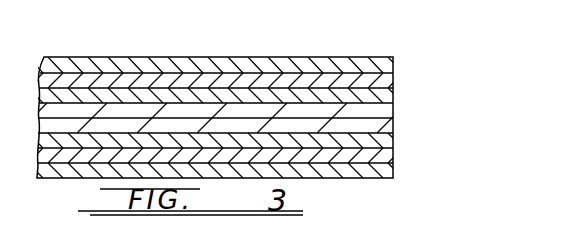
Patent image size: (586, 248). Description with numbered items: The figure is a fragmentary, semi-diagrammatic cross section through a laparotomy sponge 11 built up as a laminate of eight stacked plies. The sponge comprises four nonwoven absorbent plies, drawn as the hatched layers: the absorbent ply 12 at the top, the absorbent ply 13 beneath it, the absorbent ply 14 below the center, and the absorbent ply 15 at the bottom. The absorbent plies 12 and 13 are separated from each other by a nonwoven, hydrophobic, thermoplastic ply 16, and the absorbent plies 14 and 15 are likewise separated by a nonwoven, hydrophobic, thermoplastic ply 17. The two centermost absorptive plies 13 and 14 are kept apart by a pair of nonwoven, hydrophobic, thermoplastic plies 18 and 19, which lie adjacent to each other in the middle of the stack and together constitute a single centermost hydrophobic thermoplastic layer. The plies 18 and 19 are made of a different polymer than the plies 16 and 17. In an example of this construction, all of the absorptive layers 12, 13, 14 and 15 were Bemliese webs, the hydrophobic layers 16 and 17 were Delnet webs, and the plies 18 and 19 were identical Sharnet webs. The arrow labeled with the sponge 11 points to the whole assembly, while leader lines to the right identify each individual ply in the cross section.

The laparotomy sponge 11 is at (262, 48).
The nonwoven absorbent ply 12 is at (393, 62).
The nonwoven hydrophobic thermoplastic ply 16 is at (393, 75).
The nonwoven absorbent ply 13 is at (393, 92).
The nonwoven hydrophobic thermoplastic ply 18 is at (393, 108).
The nonwoven hydrophobic thermoplastic ply 19 is at (393, 125).
The nonwoven absorbent ply 14 is at (393, 142).
The nonwoven hydrophobic thermoplastic ply 17 is at (393, 153).
The nonwoven absorbent ply 15 is at (393, 172).